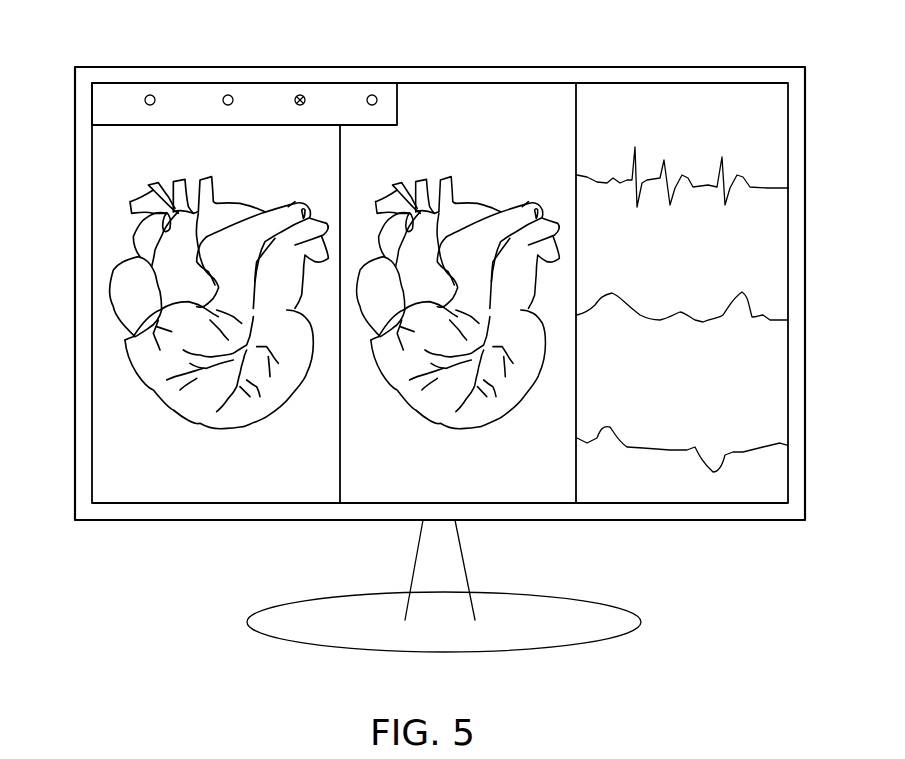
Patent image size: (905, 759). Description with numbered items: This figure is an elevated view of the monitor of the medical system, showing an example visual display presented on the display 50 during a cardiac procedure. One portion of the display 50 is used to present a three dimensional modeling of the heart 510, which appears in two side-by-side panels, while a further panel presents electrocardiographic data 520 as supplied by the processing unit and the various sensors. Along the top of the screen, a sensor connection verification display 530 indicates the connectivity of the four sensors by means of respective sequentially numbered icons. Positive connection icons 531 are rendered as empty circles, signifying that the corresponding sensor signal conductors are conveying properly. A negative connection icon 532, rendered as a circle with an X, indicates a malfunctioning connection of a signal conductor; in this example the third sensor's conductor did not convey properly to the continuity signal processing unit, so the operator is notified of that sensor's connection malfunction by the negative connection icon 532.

The display 50 is at (805, 212).
The three dimensional modeling of the heart 510 is at (147, 362).
The electrocardiographic data 520 is at (742, 452).
The sensor connection verification display 530 is at (167, 98).
The positive connection icon 531 is at (228, 93).
The negative connection icon 532 is at (300, 97).